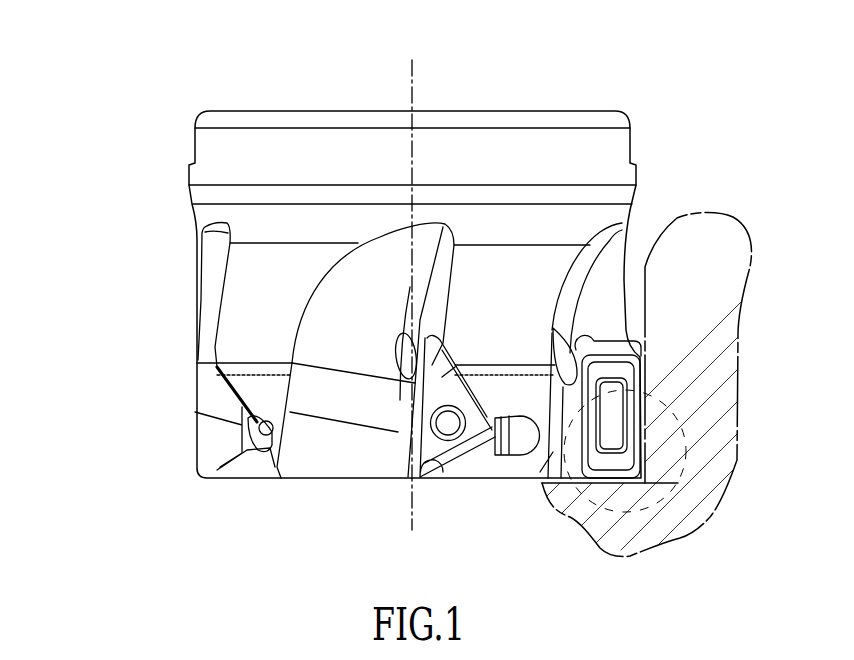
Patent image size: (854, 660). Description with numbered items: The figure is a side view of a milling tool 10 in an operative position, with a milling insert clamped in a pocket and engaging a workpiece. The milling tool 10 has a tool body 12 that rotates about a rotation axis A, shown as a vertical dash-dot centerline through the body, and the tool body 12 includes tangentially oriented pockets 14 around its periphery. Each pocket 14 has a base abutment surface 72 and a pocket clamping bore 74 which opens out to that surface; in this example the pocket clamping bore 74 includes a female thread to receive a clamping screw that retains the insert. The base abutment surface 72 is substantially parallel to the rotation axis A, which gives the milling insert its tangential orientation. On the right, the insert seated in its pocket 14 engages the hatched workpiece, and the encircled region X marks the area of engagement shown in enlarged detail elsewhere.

The milling tool 10 is at (152, 107).
The tool body 12 is at (184, 270).
The pocket 14 is at (426, 505).
The base abutment surface 72 is at (423, 405).
The pocket clamping bore 74 is at (450, 428).
The rotation axis A is at (412, 70).
The detail region X is at (666, 406).